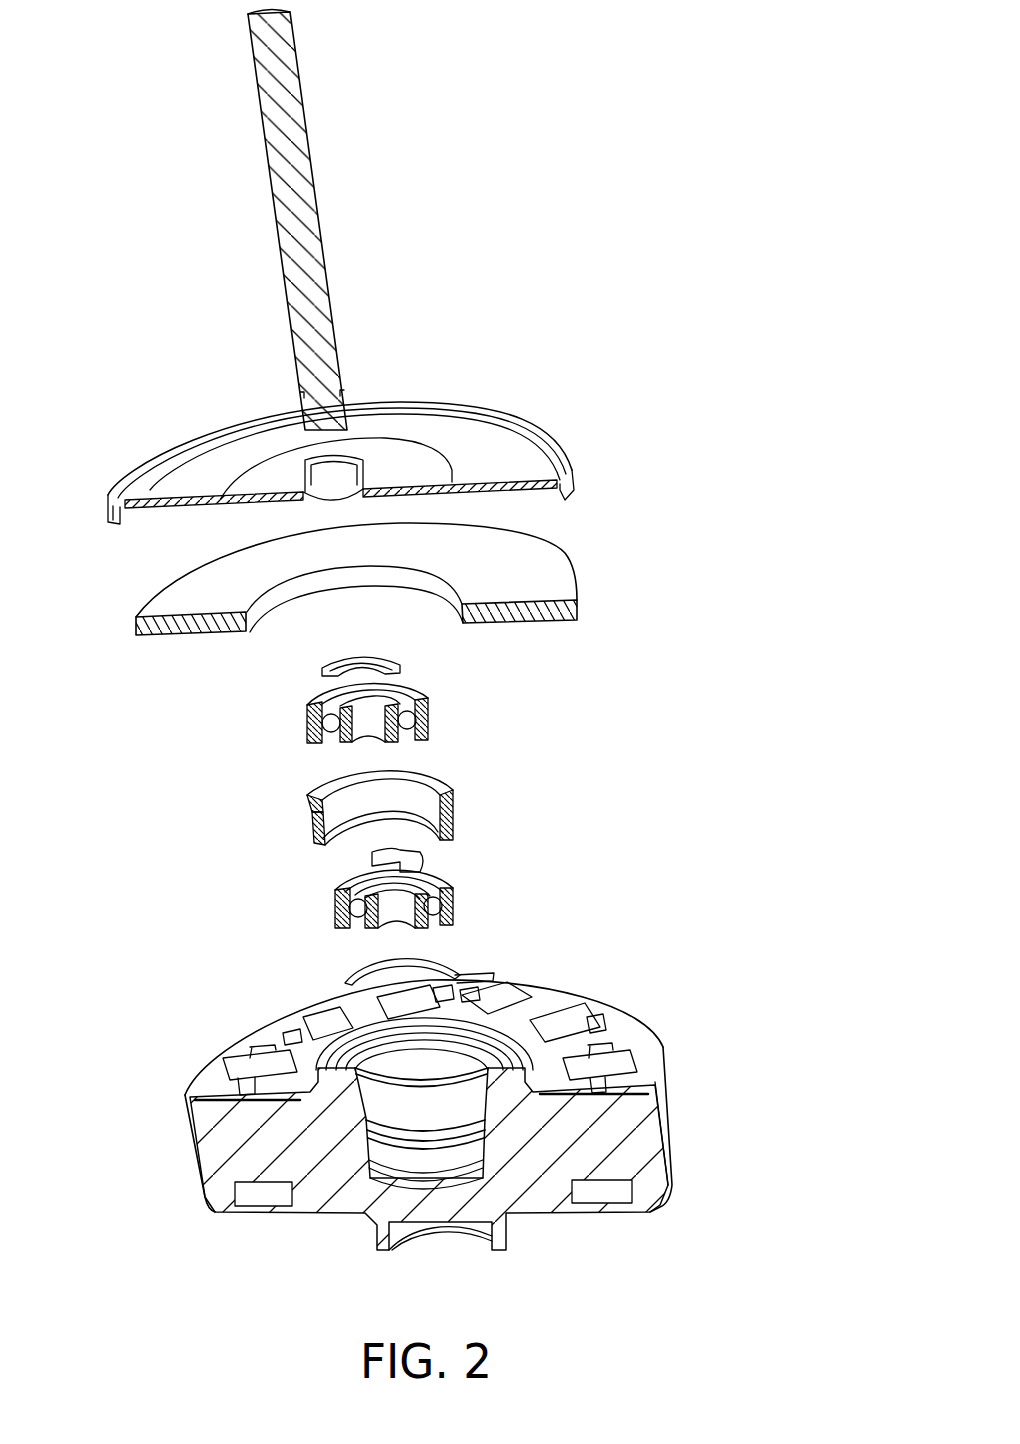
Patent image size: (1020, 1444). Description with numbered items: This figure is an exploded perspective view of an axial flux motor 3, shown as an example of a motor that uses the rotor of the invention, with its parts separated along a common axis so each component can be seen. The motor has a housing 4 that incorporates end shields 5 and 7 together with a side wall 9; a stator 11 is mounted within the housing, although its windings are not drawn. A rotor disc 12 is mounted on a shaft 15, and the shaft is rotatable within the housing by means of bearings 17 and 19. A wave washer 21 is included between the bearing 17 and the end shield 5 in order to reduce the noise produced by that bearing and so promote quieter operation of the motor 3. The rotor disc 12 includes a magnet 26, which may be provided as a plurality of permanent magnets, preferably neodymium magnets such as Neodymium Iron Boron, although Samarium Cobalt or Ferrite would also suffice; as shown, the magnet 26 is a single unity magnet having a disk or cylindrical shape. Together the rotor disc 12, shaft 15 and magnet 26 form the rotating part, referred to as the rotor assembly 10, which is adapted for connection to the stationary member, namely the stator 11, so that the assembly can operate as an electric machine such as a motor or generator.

The axial flux motor 3 is at (571, 80).
The housing 4 is at (683, 903).
The end shield 5 is at (185, 1095).
The end shield 7 is at (212, 1210).
The side wall 9 is at (672, 1125).
The rotor assembly 10 is at (610, 442).
The stator 11 is at (563, 995).
The rotor disc 12 is at (537, 425).
The shaft 15 is at (312, 172).
The bearing 17 is at (430, 712).
The bearing 19 is at (455, 906).
The wave washer 21 is at (357, 983).
The magnet 26 is at (578, 597).